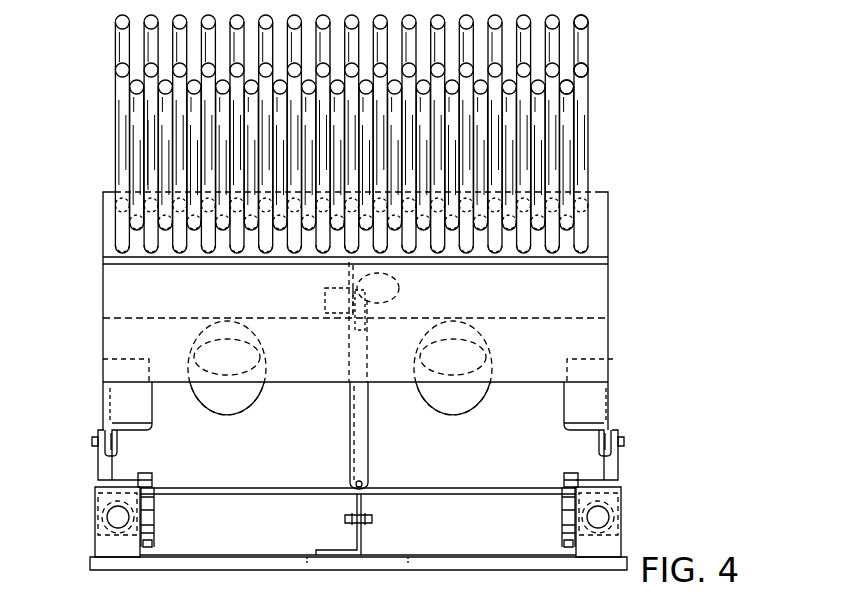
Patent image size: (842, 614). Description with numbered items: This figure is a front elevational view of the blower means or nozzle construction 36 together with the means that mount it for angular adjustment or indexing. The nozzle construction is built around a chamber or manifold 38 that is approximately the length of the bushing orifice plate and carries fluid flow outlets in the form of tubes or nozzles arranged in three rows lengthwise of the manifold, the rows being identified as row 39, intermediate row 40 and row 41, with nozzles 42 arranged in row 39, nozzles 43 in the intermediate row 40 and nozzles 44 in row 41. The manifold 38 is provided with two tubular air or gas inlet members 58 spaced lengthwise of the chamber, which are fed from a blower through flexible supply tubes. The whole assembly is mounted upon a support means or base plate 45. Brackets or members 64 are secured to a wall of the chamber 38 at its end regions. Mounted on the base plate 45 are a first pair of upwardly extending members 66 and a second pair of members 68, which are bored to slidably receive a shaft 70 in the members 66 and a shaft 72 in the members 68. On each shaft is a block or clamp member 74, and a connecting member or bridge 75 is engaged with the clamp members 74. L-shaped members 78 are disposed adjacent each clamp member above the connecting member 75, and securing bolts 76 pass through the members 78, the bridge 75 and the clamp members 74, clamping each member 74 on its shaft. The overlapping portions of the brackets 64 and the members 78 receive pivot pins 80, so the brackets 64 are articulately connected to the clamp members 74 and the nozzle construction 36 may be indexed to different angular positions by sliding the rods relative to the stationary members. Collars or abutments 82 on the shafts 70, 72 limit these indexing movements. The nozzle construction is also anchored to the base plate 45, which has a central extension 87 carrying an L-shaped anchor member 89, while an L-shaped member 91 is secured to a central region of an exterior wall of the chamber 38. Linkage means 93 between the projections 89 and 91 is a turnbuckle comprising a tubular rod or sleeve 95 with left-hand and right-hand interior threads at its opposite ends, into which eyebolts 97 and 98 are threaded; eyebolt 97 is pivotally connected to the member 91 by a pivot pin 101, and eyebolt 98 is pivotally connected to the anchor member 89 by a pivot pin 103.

The nozzle construction 36 is at (596, 189).
The manifold 38 is at (612, 270).
The first row of nozzles 39 is at (596, 22).
The intermediate row of nozzles 40 is at (587, 86).
The third row of nozzles 41 is at (597, 67).
The nozzles 42 is at (135, 47).
The nozzles 43 is at (167, 128).
The nozzles 44 is at (152, 152).
The base plate 45 is at (90, 562).
The tubular gas inlet members 58 is at (235, 413).
The brackets 64 is at (150, 432).
The first pair of upwardly extending members 66 is at (95, 540).
The second pair of members 68 is at (622, 545).
The shaft 70 is at (115, 517).
The shaft 72 is at (601, 512).
The clamp member 74 is at (155, 505).
The connecting member 75 is at (262, 488).
The securing bolts 76 is at (150, 475).
The L-shaped members 78 is at (102, 455).
The pivot pins 80 is at (95, 440).
The collars 82 is at (100, 496).
The central extension 87 is at (302, 566).
The L-shaped anchor member 89 is at (340, 548).
The L-shaped member 91 is at (330, 290).
The linkage means 93 is at (348, 401).
The tubular rod 95 is at (368, 428).
The eyebolt 97 is at (386, 280).
The eyebolt 98 is at (362, 527).
The pivot pin 101 is at (386, 298).
The pivot pin 103 is at (372, 519).